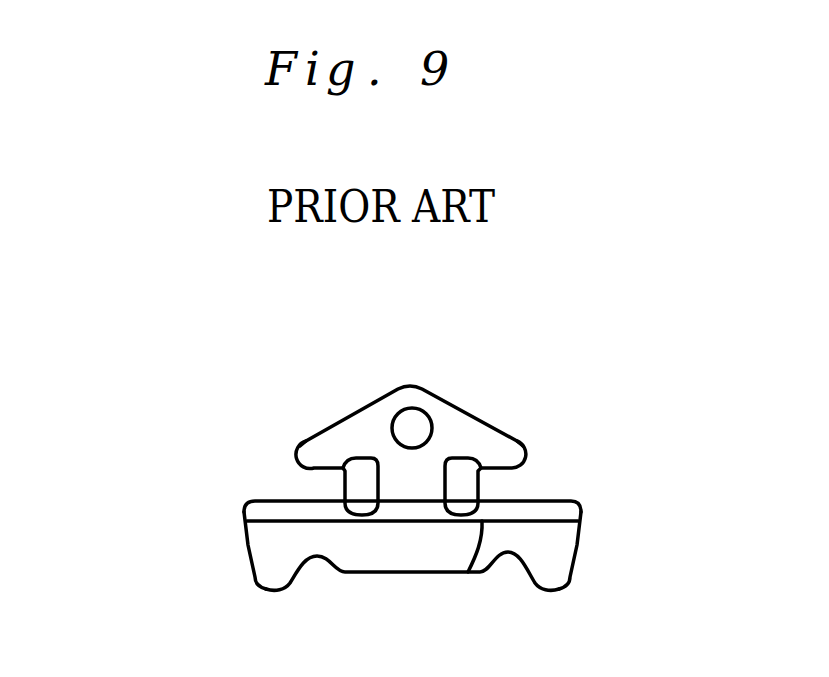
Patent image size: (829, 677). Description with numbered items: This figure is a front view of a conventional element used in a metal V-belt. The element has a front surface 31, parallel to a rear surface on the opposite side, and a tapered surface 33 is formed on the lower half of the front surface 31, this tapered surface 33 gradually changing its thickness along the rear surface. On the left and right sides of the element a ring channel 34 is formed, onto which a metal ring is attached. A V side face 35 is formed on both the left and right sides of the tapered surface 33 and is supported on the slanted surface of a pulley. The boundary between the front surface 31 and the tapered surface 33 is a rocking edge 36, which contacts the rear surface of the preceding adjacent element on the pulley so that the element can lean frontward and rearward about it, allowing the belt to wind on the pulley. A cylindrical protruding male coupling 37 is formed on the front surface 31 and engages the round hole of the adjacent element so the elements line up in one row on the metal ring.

The front surface 31 is at (355, 425).
The tapered surface 33 is at (422, 561).
The ring channel 34 is at (320, 467).
The V side face 35 is at (248, 547).
The rocking edge 36 is at (460, 567).
The male coupling 37 is at (426, 411).